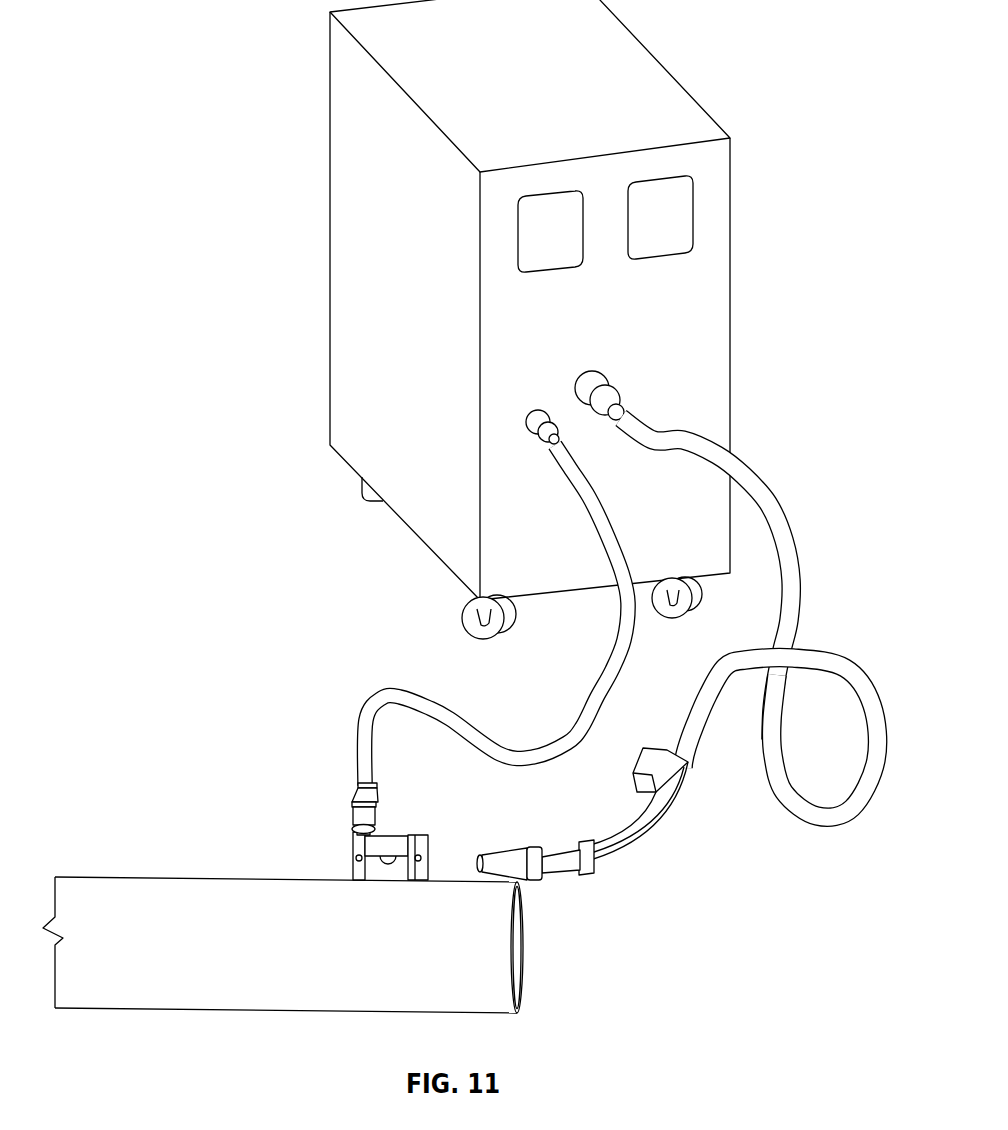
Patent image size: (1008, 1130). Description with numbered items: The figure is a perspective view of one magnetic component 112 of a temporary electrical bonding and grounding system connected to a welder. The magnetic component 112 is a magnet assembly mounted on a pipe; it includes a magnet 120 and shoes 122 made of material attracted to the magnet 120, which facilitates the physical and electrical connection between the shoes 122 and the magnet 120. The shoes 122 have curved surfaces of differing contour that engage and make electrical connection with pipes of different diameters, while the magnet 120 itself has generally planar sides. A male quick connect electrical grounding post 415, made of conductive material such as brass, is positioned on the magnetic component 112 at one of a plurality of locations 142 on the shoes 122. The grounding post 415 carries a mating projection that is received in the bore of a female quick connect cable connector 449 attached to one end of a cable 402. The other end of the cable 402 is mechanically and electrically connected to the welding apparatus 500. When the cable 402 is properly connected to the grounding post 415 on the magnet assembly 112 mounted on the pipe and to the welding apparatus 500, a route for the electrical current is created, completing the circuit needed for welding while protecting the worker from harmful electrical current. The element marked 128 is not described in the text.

The welding apparatus 500 is at (708, 336).
The cable 402 is at (533, 750).
The female quick connect cable connector 449 is at (350, 812).
The male quick connect electrical grounding post 415 is at (353, 840).
The magnetic component 112 is at (340, 857).
The clamp plate 128 is at (393, 840).
The shoe 122 is at (430, 862).
The locations 142 is at (352, 858).
The magnet 120 is at (364, 917).